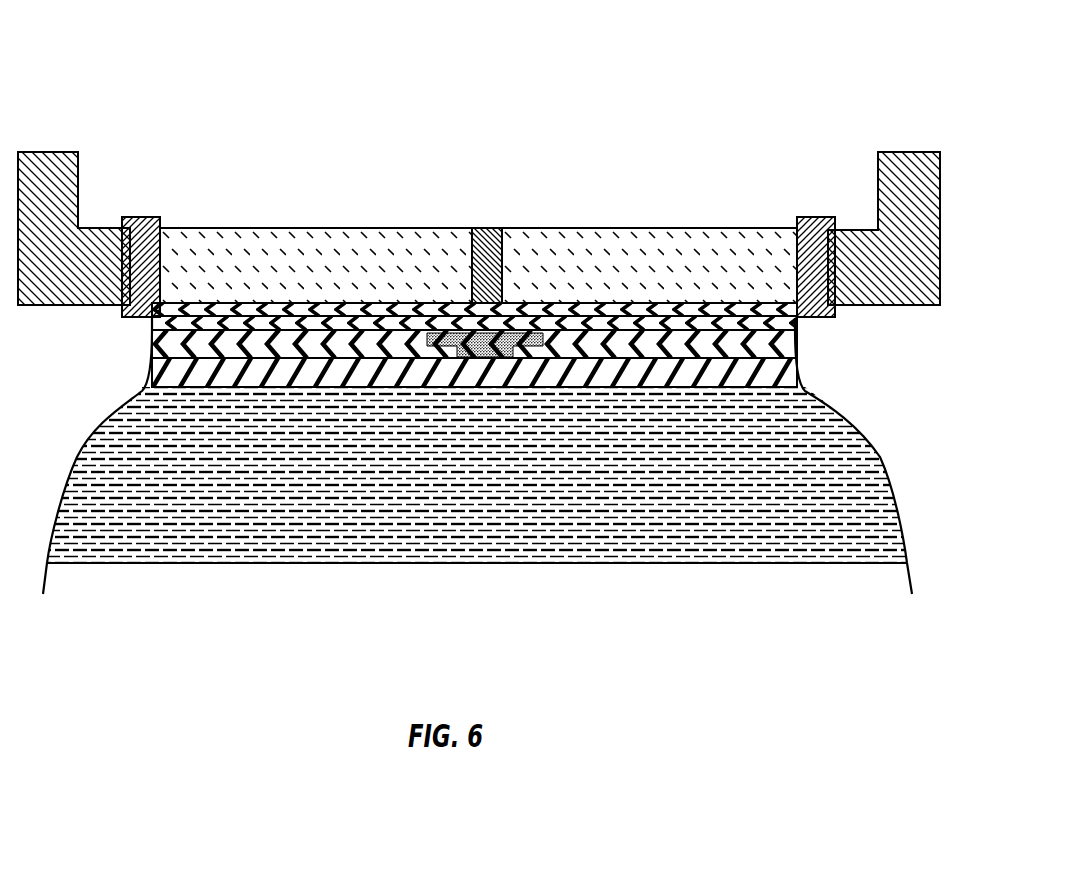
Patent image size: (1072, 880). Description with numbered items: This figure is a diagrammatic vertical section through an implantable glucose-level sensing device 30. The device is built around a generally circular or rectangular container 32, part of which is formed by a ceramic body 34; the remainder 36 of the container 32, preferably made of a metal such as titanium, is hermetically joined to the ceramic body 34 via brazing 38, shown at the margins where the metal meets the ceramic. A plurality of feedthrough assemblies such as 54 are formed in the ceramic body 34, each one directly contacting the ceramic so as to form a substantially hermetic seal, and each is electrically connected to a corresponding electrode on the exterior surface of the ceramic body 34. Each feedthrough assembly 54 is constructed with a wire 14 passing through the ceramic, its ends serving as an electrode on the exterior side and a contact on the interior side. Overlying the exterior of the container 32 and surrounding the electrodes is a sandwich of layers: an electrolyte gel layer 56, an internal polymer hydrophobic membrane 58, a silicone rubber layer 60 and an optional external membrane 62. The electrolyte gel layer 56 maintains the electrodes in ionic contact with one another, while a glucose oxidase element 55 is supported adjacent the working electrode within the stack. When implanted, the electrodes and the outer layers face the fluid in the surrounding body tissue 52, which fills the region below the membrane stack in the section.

The implantable glucose-level sensing device 30 is at (143, 63).
The container 32 is at (948, 200).
The remainder of the container 36 is at (900, 152).
The brazing 38 is at (815, 217).
The feedthrough assembly 54 is at (287, 178).
The ceramic body 34 is at (583, 228).
The wire 14 is at (488, 232).
The electrolyte gel layer 56 is at (277, 312).
The internal polymer hydrophobic membrane 58 is at (247, 323).
The silicone rubber layer 60 is at (302, 348).
The glucose oxidase element 55 is at (476, 357).
The external membrane 62 is at (356, 372).
The body tissue 52 is at (459, 531).